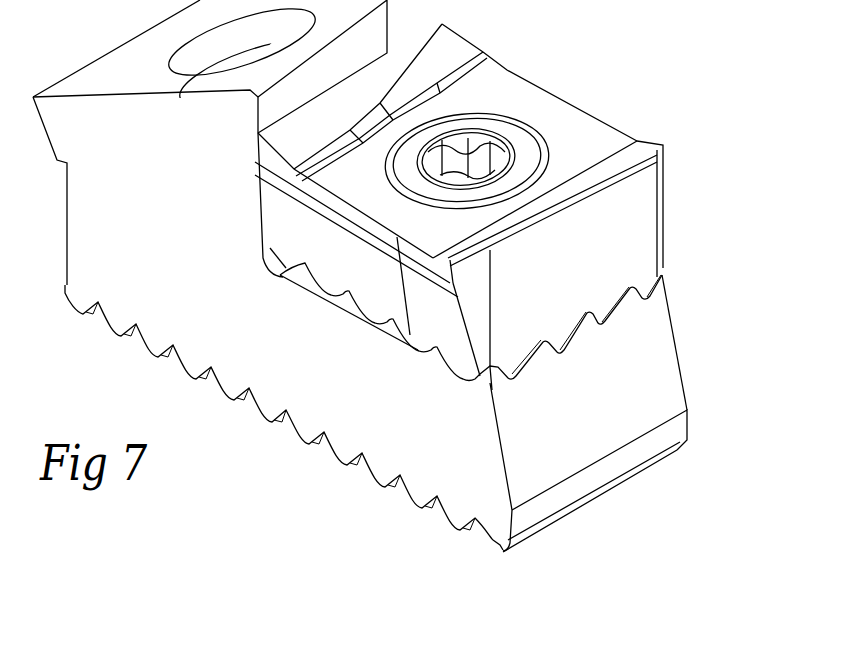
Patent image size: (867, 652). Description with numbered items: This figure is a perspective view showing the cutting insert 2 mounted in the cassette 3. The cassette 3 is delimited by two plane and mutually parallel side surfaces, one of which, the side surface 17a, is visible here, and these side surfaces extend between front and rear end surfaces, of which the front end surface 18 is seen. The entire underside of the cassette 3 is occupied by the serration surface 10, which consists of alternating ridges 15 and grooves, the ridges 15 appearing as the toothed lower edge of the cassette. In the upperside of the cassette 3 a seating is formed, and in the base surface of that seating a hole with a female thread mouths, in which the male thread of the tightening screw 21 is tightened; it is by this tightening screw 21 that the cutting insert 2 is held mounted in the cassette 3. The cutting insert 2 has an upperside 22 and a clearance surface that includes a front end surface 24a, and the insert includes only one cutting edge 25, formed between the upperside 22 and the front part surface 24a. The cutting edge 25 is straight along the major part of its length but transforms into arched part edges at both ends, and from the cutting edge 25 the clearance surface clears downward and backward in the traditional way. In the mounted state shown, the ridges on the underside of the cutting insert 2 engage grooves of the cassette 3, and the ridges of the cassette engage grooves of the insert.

The cutting insert 2 is at (701, 161).
The cassette 3 is at (720, 332).
The serration surface 10 is at (375, 503).
The ridges 15 is at (497, 540).
The side surface 17a is at (173, 224).
The front end surface 18 is at (600, 407).
The tightening screw 21 is at (500, 132).
The upperside of the cutting insert 22 is at (612, 107).
The front end surface 24a is at (595, 279).
The cutting edge 25 is at (597, 193).